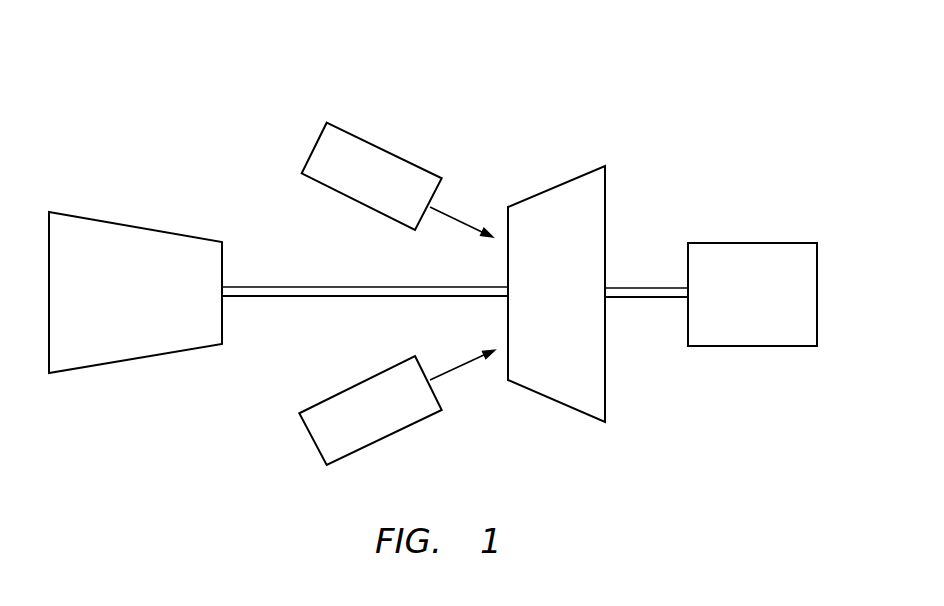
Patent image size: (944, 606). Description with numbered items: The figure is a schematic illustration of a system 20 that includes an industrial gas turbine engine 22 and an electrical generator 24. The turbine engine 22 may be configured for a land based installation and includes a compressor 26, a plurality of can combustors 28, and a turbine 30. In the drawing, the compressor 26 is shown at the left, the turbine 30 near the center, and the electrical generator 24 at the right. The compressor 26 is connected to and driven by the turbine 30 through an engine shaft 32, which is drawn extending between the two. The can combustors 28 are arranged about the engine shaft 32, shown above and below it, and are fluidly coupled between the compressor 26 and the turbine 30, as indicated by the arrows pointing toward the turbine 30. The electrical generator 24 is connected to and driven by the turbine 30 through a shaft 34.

The system 20 is at (130, 73).
The industrial gas turbine engine 22 is at (468, 82).
The electrical generator 24 is at (738, 308).
The compressor 26 is at (110, 303).
The can combustors 28 is at (387, 183).
The turbine 30 is at (540, 311).
The engine shaft 32 is at (308, 298).
The shaft 34 is at (640, 298).